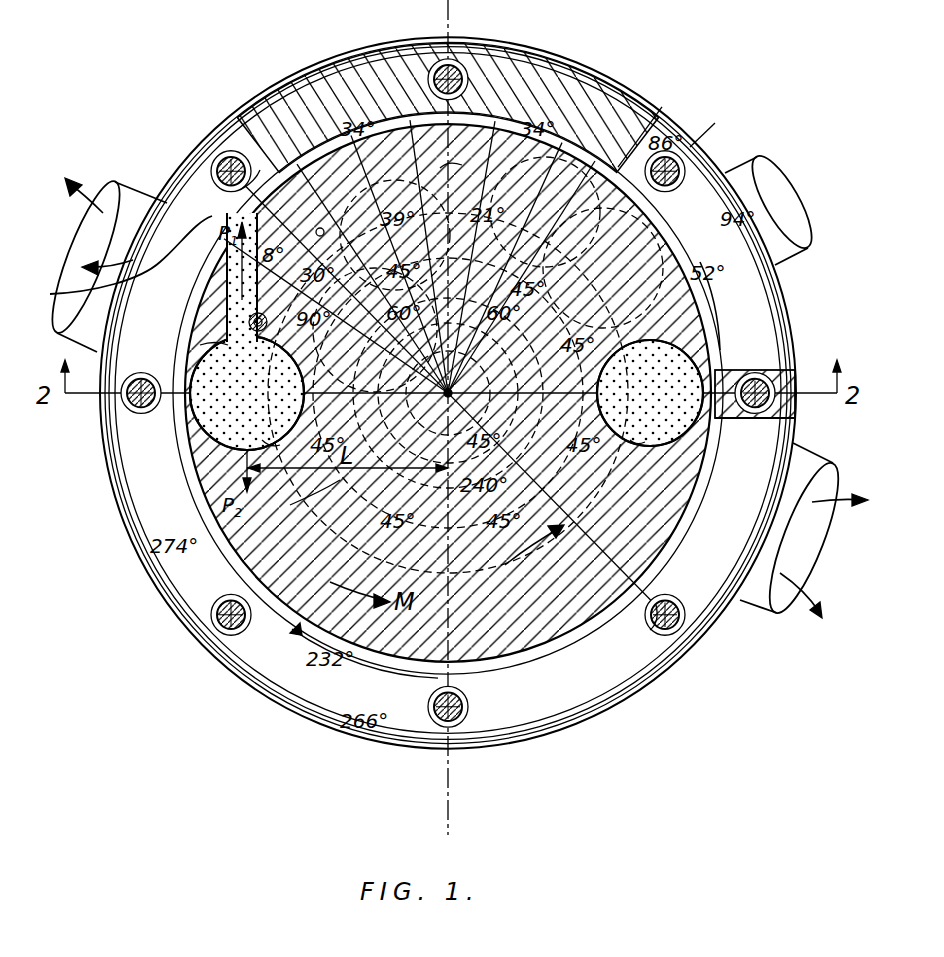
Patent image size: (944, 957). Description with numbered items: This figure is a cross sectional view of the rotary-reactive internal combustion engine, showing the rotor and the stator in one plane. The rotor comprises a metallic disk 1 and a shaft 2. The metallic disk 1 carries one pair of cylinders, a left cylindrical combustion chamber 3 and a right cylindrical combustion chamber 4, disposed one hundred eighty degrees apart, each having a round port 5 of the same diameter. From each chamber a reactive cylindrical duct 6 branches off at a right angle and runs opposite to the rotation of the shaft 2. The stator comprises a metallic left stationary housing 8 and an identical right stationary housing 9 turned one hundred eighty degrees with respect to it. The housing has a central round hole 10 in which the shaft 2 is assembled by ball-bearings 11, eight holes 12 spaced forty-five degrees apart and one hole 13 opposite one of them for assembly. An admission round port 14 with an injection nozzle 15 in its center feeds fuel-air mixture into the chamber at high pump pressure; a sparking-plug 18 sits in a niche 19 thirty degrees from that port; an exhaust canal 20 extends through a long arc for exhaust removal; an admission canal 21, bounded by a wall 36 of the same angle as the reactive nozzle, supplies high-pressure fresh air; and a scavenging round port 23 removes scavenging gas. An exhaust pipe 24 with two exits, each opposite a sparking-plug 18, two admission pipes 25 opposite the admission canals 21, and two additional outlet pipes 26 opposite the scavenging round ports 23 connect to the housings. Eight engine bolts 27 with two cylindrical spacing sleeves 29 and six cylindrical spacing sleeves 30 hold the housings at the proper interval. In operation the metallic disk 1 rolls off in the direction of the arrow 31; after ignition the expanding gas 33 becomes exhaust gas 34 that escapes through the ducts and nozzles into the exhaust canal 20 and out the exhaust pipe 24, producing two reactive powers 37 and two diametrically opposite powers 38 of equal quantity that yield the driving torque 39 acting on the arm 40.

The metallic disk 1 is at (503, 624).
The shaft 2 is at (434, 424).
The left cylindrical combustion chamber 3 is at (227, 389).
The right cylindrical combustion chamber 4 is at (629, 389).
The round port 5 is at (262, 442).
The reactive cylindrical duct 6 is at (251, 309).
The left stationary housing 8 is at (321, 118).
The right stationary housing 9 is at (752, 394).
The round hole 10 is at (540, 405).
The ball-bearings 11 is at (484, 449).
The holes 12 is at (440, 62).
The hole 13 is at (693, 155).
The admission round port 14 is at (360, 190).
The injection nozzle 15 is at (325, 218).
The sparking-plug 18 is at (266, 328).
The niche 19 is at (223, 328).
The exhaust canal 20 is at (586, 692).
The admission canal 21 is at (757, 312).
The scavenging round port 23 is at (580, 188).
The exhaust pipe 24 is at (108, 250).
The admission pipe 25 is at (648, 120).
The outlet pipe 26 is at (462, 165).
The engine bolts 27 is at (232, 155).
The cylindrical spacing sleeves 29 is at (230, 192).
The cylindrical spacing sleeves 30 is at (470, 84).
The arrow 31 is at (534, 553).
The expanding gas 33 is at (275, 436).
The exhaust gas 34 is at (213, 218).
The wall 36 is at (750, 420).
The reactive power P1 37 is at (225, 258).
The power P2 38 is at (300, 505).
The driving torque M 39 is at (350, 597).
The arm L 40 is at (345, 480).